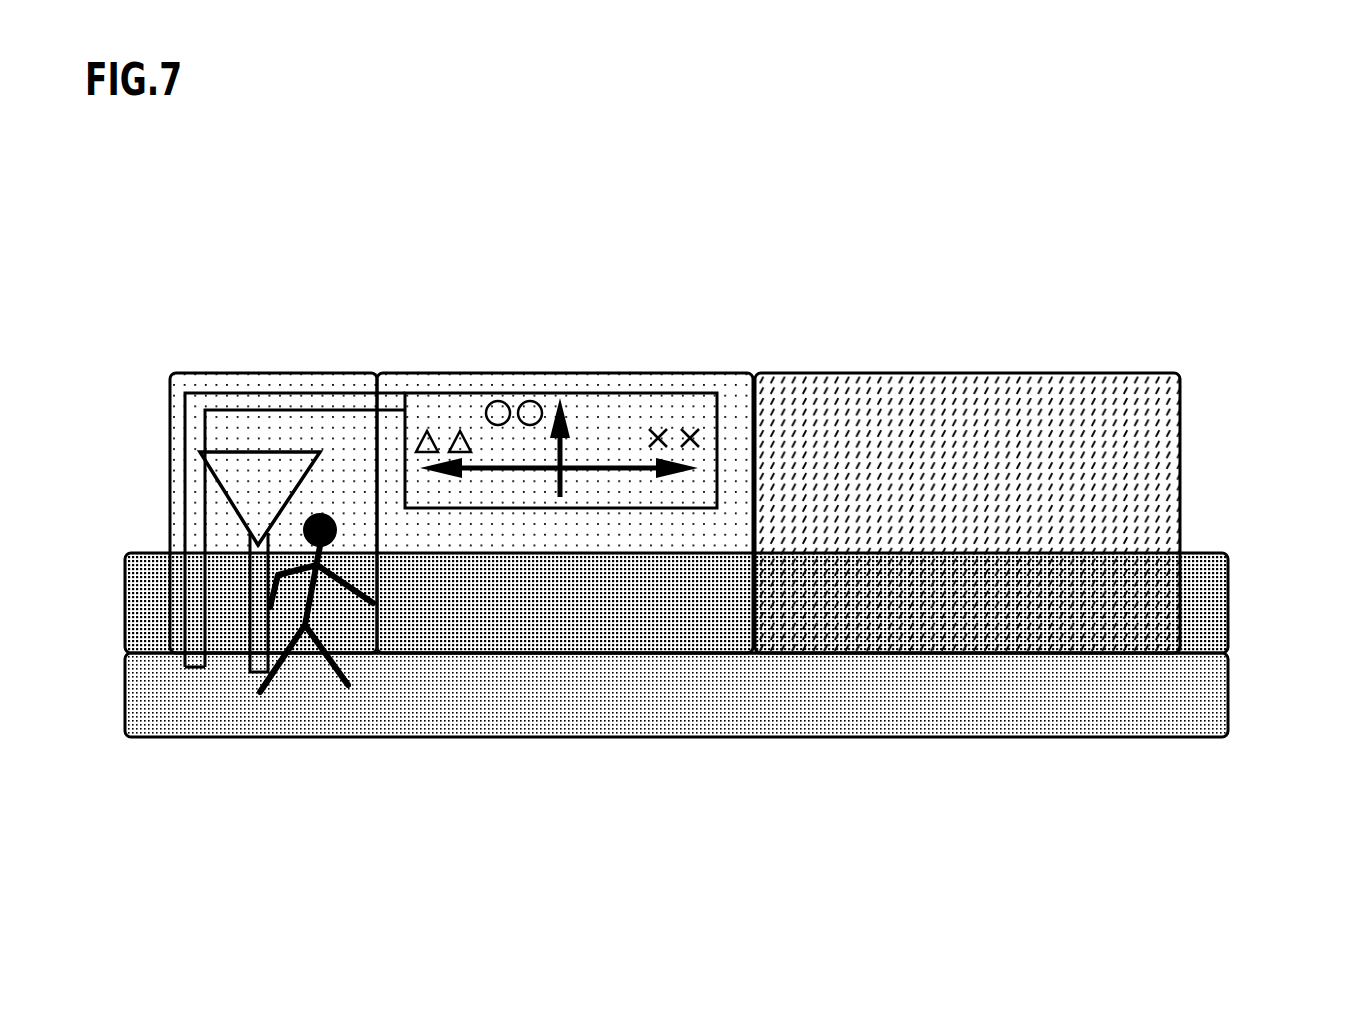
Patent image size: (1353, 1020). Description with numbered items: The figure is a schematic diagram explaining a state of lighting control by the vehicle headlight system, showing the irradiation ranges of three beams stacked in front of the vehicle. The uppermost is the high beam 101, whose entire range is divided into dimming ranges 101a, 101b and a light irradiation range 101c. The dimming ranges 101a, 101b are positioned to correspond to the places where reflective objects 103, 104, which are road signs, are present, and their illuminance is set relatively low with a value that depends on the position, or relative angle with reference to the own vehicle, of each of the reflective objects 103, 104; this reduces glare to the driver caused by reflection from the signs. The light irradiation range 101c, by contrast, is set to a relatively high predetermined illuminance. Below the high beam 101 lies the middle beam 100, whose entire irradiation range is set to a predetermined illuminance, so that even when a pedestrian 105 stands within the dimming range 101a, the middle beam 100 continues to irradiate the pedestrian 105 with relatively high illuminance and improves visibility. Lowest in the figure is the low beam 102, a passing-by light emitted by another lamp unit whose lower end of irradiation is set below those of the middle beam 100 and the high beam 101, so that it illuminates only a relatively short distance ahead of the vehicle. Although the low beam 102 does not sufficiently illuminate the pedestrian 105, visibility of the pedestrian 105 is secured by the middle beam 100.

The middle beam 100 is at (1257, 612).
The high beam 101 is at (719, 446).
The dimming range 101a is at (275, 372).
The dimming range 101b is at (515, 372).
The light irradiation range 101c is at (948, 372).
The low beam 102 is at (1262, 702).
The reflective object 103 is at (628, 395).
The reflective object 104 is at (216, 450).
The pedestrian 105 is at (321, 510).